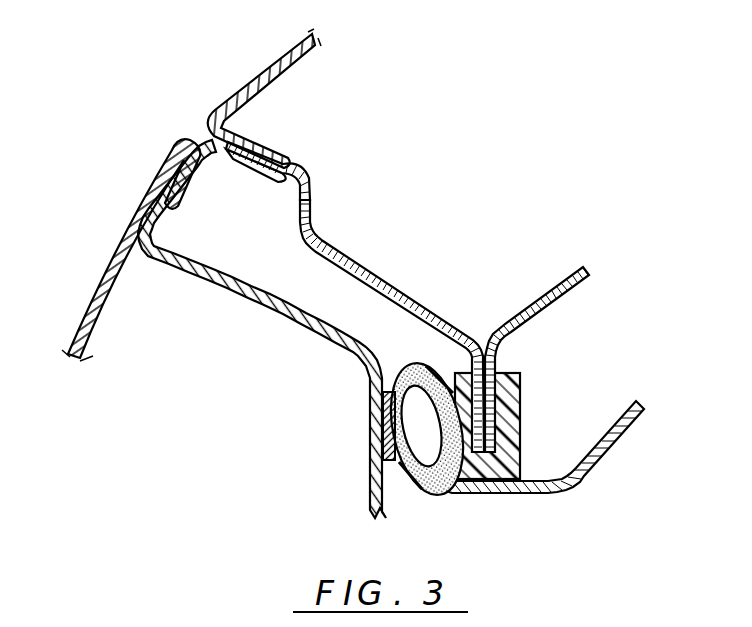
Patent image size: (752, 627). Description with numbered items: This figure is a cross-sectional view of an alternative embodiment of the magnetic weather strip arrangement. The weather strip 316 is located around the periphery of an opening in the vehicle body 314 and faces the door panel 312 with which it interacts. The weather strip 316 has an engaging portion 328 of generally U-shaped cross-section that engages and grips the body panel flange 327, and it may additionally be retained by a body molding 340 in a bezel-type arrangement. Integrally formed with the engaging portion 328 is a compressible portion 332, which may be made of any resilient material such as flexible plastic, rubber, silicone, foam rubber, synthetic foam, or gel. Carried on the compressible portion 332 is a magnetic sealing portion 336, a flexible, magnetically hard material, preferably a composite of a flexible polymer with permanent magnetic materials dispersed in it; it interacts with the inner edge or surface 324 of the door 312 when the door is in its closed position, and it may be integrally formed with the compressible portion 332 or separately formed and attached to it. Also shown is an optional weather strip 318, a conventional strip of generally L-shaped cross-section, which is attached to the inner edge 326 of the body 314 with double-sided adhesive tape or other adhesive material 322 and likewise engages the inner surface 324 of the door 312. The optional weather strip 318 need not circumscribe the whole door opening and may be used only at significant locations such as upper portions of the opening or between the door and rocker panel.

The door panel 312 is at (119, 199).
The vehicle body 314 is at (242, 56).
The weather strip 316 is at (450, 368).
The optional weather strip 318 is at (267, 174).
The adhesive material 322 is at (252, 151).
The inner edge 324 is at (371, 364).
The inner edge 326 is at (302, 229).
The body panel flange 327 is at (488, 406).
The engaging portion 328 is at (510, 431).
The compressible portion 332 is at (422, 388).
The magnetic sealing portion 336 is at (387, 428).
The body molding 340 is at (600, 451).